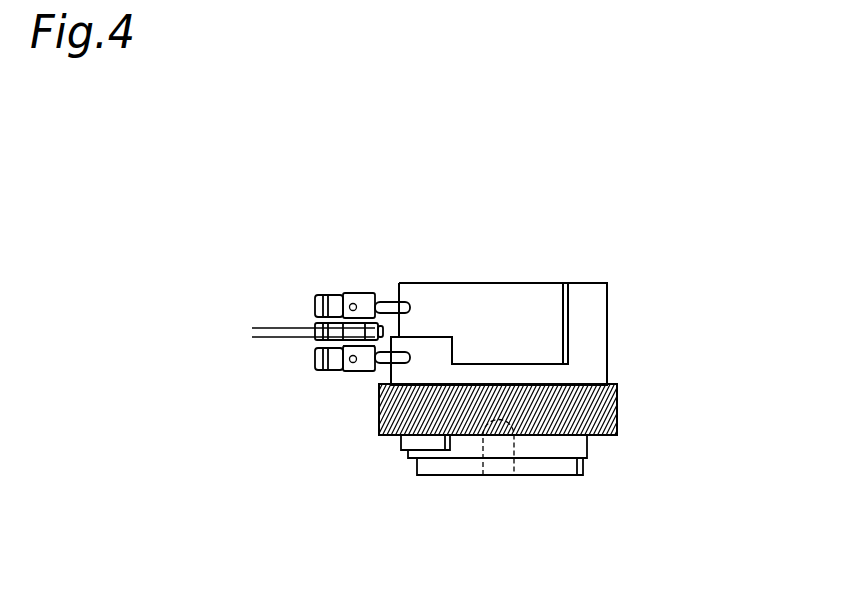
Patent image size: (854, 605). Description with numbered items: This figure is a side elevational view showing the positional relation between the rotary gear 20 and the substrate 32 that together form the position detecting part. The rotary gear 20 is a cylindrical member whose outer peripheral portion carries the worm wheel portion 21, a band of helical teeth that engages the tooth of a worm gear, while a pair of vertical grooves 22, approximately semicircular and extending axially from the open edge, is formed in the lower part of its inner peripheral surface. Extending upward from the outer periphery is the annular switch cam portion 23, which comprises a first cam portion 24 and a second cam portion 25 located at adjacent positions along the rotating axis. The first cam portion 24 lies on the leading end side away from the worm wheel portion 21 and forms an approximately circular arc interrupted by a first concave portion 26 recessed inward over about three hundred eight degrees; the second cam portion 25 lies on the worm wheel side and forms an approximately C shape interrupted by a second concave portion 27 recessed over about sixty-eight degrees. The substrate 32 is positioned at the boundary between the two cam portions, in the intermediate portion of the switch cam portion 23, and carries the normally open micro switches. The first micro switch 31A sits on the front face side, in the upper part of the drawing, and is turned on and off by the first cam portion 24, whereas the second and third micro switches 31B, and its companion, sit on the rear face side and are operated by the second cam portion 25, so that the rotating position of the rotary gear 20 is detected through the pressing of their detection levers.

The rotary gear 20 is at (613, 278).
The worm wheel portion 21 is at (615, 413).
The vertical grooves 22 is at (502, 463).
The switch cam portion 23 is at (598, 347).
The first cam portion 24 is at (583, 290).
The second cam portion 25 is at (431, 343).
The first concave portion 26 is at (488, 295).
The second concave portion 27 is at (528, 352).
The first micro switch 31A is at (345, 294).
The second micro switch 31B is at (343, 370).
The substrate 32 is at (265, 332).